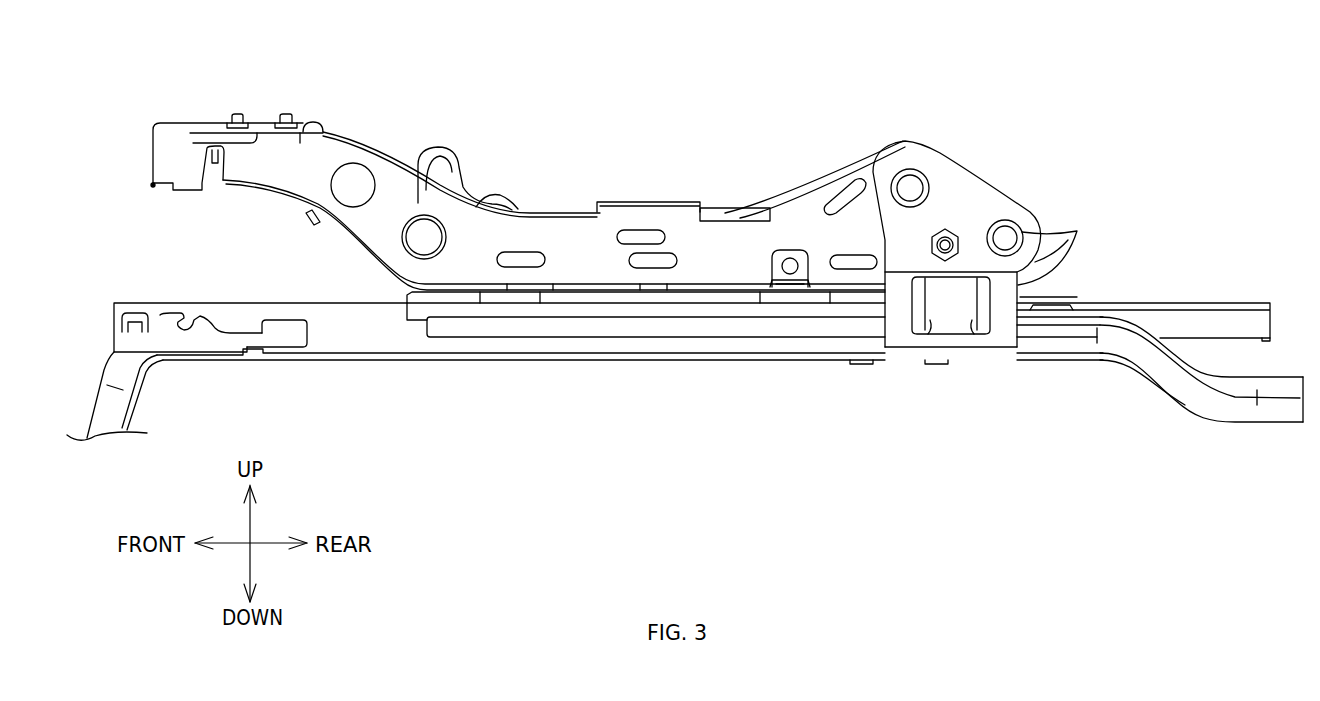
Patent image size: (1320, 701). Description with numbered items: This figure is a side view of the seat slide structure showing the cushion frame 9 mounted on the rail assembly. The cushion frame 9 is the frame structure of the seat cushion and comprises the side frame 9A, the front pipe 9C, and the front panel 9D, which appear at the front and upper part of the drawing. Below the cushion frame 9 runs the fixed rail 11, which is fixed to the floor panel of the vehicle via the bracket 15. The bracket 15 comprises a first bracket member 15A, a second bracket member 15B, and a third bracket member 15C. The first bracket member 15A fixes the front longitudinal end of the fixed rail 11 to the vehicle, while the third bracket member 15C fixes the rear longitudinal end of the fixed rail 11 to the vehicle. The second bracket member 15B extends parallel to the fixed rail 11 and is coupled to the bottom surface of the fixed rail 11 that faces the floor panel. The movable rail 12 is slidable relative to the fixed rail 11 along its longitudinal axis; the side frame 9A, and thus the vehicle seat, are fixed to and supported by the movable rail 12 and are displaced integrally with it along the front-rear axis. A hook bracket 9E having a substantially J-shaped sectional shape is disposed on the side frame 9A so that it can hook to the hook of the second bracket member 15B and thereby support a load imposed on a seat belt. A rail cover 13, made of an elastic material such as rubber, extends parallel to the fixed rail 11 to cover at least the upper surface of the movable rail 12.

The cushion frame 9 is at (563, 189).
The side frame 9A is at (360, 131).
The front pipe 9C is at (436, 168).
The front panel 9D is at (172, 153).
The hook bracket 9E is at (963, 283).
The fixed rail 11 is at (205, 301).
The movable rail 12 is at (1187, 299).
The rail cover 13 is at (405, 294).
The bracket 15 is at (430, 362).
The first bracket member 15A is at (95, 408).
The second bracket member 15B is at (780, 360).
The third bracket member 15C is at (1157, 395).